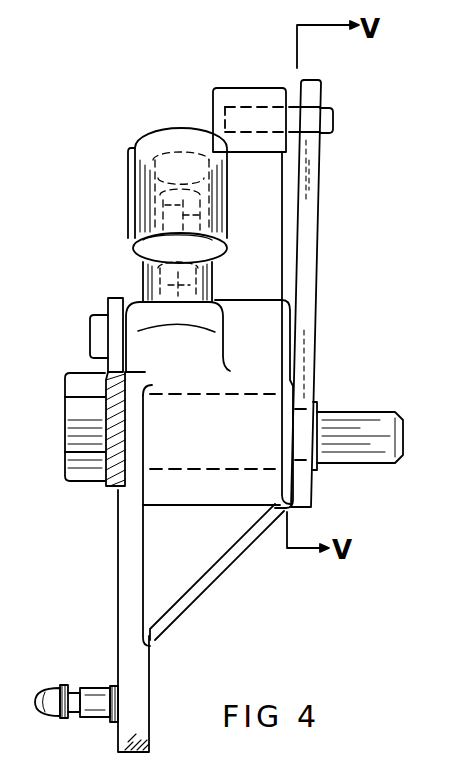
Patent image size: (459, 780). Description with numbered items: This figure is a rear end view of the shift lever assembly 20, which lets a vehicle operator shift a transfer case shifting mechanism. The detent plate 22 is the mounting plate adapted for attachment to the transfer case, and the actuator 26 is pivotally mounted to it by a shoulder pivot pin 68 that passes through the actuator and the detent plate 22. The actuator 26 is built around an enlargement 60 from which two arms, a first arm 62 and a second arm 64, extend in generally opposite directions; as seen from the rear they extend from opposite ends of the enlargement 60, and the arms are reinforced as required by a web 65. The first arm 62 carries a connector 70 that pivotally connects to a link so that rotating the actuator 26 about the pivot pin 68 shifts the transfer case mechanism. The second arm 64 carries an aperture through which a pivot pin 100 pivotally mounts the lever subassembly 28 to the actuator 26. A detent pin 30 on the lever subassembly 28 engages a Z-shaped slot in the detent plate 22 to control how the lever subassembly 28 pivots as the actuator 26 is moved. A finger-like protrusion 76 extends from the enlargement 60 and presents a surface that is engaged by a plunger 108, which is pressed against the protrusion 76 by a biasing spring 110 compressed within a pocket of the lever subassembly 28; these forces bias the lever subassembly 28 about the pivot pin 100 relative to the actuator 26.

The shift lever assembly 20 is at (150, 108).
The detent plate 22 is at (316, 263).
The actuator 26 is at (118, 546).
The lever subassembly 28 is at (128, 182).
The detent pin 30 is at (333, 118).
The enlargement 60 is at (213, 434).
The arm 62 is at (117, 614).
The second arm 64 is at (253, 230).
The web 65 is at (185, 550).
The shoulder pivot pin 68 is at (65, 412).
The connector 70 is at (50, 717).
The finger-like protrusion 76 is at (163, 322).
The pivot pin 100 is at (88, 327).
The plunger 108 is at (160, 270).
The biasing spring 110 is at (157, 213).